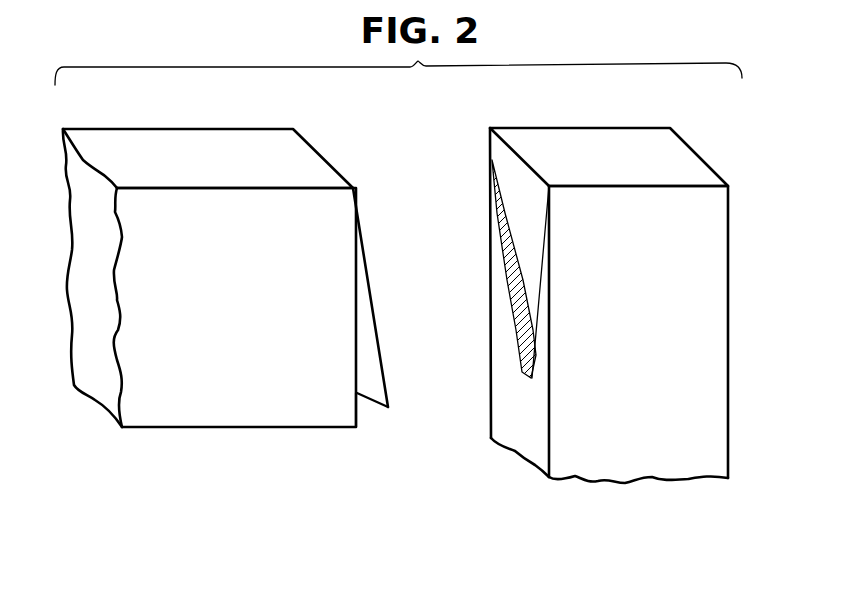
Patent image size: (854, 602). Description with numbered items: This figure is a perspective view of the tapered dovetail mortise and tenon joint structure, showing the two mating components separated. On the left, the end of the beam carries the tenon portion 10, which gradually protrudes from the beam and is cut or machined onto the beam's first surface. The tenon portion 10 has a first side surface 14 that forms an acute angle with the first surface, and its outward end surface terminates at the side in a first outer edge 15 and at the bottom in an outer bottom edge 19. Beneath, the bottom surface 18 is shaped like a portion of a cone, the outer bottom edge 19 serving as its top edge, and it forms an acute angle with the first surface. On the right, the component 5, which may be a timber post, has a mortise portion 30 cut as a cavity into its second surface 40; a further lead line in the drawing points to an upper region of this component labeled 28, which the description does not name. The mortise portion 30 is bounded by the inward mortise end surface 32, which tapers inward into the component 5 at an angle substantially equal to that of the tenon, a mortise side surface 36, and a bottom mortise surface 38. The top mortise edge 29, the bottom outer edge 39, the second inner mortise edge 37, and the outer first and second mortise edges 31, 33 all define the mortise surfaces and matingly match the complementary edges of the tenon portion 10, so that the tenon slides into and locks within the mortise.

The component 5 is at (634, 501).
The tenon portion 10 is at (316, 452).
The first side surface 14 is at (370, 374).
The first outer edge 15 is at (377, 330).
The bottom surface 18 is at (372, 407).
The outer bottom edge 19 is at (388, 406).
The top surface of second workpiece 28 is at (549, 202).
The top mortise edge 29 is at (507, 162).
The mortise portion 30 is at (506, 476).
The outer first mortise edge 31 is at (538, 312).
The inward mortise end surface 32 is at (528, 218).
The outer second mortise edge 33 is at (510, 278).
The mortise side surface 36 is at (520, 318).
The second inner mortise edge 37 is at (508, 248).
The bottom mortise surface 38 is at (527, 348).
The bottom outer edge 39 is at (530, 378).
The second surface 40 is at (508, 431).